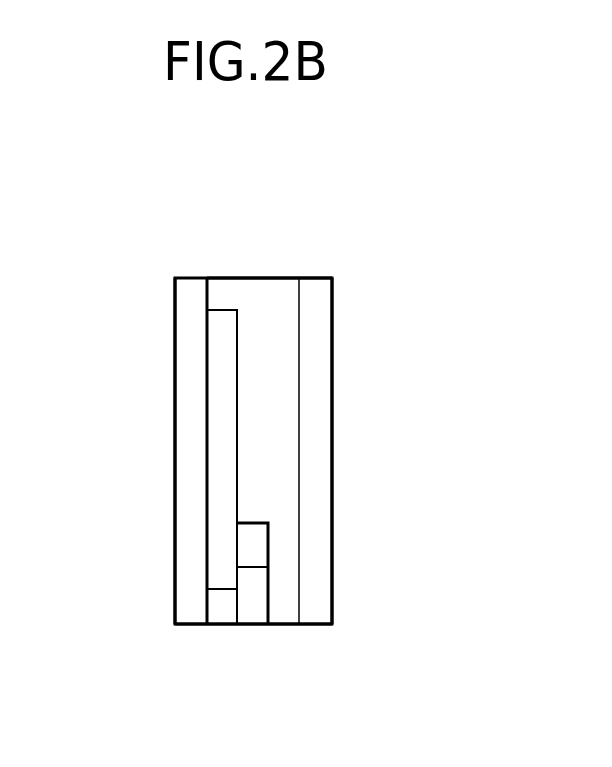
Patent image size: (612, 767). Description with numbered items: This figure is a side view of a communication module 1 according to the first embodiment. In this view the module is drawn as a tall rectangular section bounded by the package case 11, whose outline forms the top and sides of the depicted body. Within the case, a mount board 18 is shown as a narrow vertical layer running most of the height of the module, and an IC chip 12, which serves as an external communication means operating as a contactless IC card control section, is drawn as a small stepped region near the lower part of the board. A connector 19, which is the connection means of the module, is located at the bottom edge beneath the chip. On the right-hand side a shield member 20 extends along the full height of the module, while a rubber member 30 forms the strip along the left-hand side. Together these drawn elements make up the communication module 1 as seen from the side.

The communication module 1 is at (336, 264).
The package case 11 is at (255, 278).
The IC chip 12 is at (258, 545).
The mount board 18 is at (213, 438).
The connector 19 is at (255, 612).
The shield member 20 is at (322, 346).
The rubber member 30 is at (187, 346).